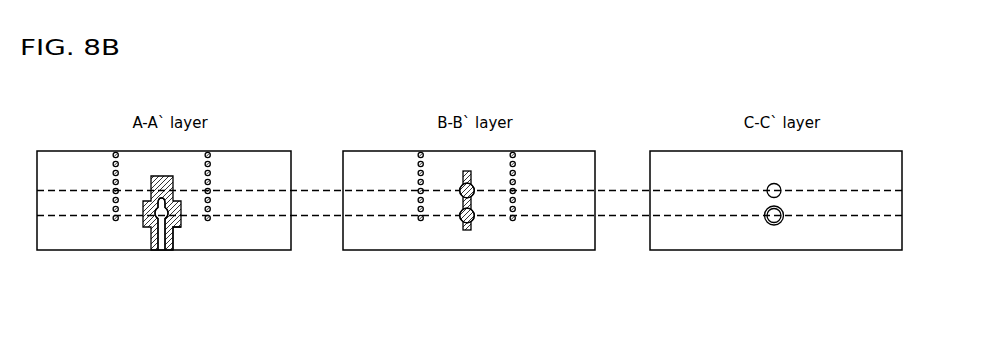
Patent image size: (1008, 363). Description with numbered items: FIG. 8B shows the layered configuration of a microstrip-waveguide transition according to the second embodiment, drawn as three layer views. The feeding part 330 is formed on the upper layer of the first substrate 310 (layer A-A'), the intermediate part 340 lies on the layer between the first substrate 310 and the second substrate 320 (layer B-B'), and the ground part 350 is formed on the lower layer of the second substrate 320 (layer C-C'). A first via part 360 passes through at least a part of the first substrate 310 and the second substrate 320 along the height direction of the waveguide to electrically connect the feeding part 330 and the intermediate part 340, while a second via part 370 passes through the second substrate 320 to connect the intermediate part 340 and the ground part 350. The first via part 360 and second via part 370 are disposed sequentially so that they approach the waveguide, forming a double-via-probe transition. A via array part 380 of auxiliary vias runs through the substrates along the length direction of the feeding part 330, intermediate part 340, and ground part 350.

The first substrate 310 is at (143, 218).
The second substrate 320 is at (416, 238).
The feeding part 330 is at (160, 250).
The intermediate part 340 is at (460, 216).
The ground part 350 is at (708, 240).
The first via part 360 is at (182, 227).
The second via part 370 is at (474, 193).
The via array part 380 is at (113, 201).